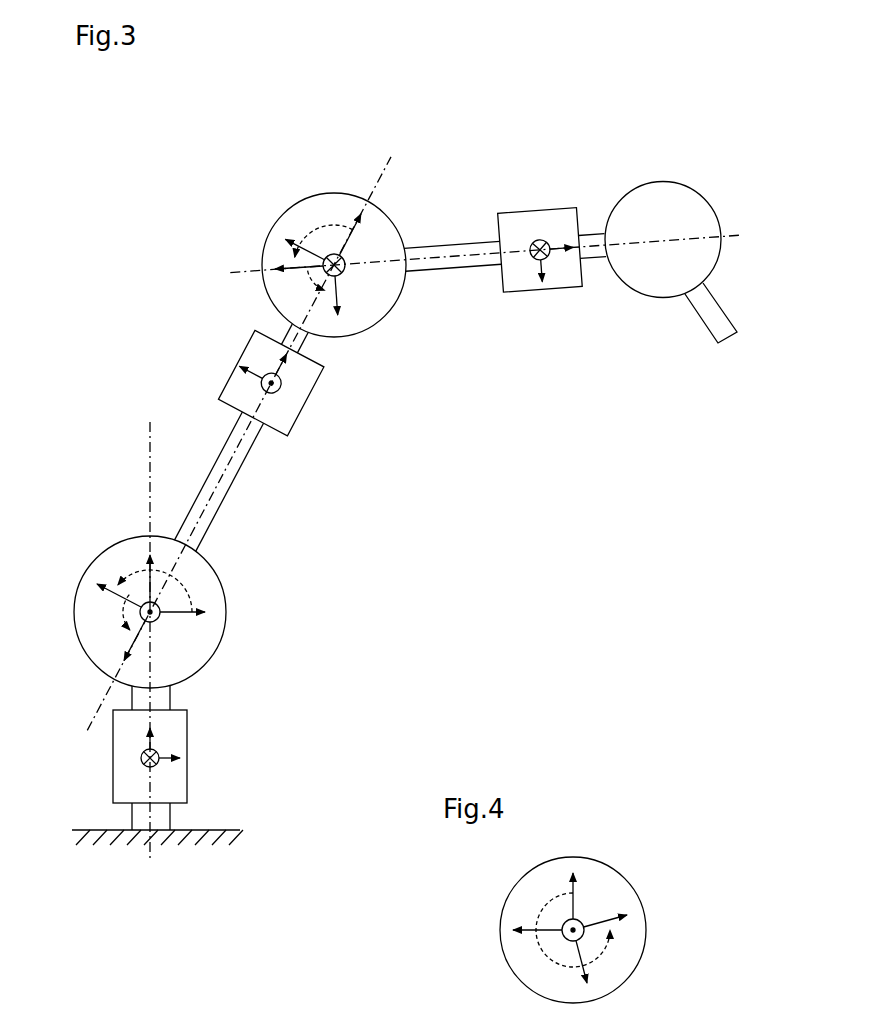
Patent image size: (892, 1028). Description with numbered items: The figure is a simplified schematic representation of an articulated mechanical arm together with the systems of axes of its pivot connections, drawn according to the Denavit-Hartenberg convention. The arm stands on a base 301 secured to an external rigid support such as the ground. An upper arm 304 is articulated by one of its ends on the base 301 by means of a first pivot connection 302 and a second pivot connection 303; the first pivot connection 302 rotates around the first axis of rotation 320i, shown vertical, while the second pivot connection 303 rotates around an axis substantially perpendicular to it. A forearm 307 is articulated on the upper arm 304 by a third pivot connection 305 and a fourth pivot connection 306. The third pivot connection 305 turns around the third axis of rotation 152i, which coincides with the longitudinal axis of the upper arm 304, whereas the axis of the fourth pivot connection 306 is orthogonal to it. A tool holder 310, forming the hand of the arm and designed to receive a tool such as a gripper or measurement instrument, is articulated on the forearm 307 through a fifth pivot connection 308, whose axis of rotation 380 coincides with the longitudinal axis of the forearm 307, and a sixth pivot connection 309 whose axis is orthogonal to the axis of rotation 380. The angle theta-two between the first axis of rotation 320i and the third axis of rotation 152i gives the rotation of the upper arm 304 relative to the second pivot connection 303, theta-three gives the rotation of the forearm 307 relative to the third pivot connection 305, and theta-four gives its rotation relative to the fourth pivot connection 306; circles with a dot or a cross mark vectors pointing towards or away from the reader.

In FIG. 3, the base 301 is at (170, 820).
In FIG. 3, the first pivot connection 302 is at (187, 770).
In FIG. 3, the second pivot connection 303 is at (85, 652).
In FIG. 3, the upper arm 304 is at (233, 492).
In FIG. 3, the third pivot connection 305 is at (305, 405).
In FIG. 4, the third pivot connection 305 is at (643, 910).
In FIG. 3, the fourth pivot connection 306 is at (293, 203).
In FIG. 3, the forearm 307 is at (462, 273).
In FIG. 3, the fifth pivot connection 308 is at (517, 210).
In FIG. 3, the sixth pivot connection 309 is at (640, 297).
In FIG. 3, the tool holder 310 is at (712, 338).
In FIG. 3, the first axis of rotation 320i is at (150, 446).
In FIG. 3, the third axis of rotation 152i is at (88, 728).
In FIG. 3, the axis of rotation of the fifth pivot connection 380 is at (240, 272).